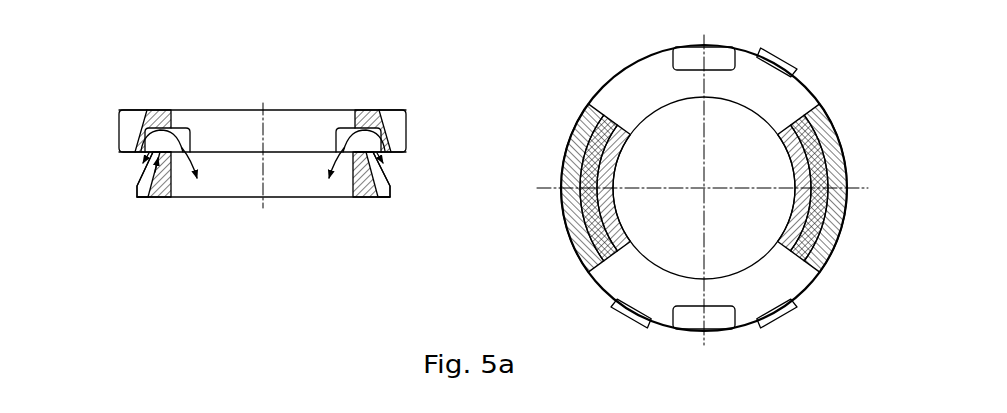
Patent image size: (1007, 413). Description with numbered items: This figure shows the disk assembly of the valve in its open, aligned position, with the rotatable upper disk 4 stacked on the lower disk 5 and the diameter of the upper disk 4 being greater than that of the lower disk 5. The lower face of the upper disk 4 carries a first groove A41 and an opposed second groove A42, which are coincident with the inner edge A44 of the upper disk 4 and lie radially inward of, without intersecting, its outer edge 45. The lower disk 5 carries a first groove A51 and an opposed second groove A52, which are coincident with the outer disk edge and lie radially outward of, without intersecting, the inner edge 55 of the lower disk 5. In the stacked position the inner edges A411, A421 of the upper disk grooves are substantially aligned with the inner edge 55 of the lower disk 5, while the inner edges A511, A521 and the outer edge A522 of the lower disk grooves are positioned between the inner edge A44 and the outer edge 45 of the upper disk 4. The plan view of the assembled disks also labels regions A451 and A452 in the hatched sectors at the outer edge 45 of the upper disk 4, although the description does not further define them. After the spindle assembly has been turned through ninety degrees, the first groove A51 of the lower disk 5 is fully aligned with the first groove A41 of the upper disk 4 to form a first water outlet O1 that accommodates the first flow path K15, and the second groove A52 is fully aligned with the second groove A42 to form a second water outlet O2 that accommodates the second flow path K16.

The upper disk 4 is at (124, 124).
The lower disk 5 is at (140, 191).
The outer edge of upper disk 45 is at (409, 130).
The inner edge of lower disk 55 is at (355, 178).
The first groove of upper disk A41 is at (149, 135).
The inner edge of first upper disk groove A411 is at (180, 140).
The second groove of upper disk A42 is at (359, 132).
The inner edge of second upper disk groove A421 is at (370, 145).
The inner edge of upper disk A44 is at (276, 127).
The first outer segment A451 is at (585, 120).
The second outer segment A452 is at (802, 128).
The first groove of lower disk A51 is at (142, 173).
The inner edge of first lower disk groove A511 is at (160, 197).
The second groove of lower disk A52 is at (382, 172).
The inner edge of second lower disk groove A521 is at (148, 198).
The outer edge of second lower disk groove A522 is at (393, 185).
The first flow path K15 is at (180, 120).
The second flow path K16 is at (378, 113).
The first water outlet O1 is at (108, 190).
The second water outlet O2 is at (441, 206).